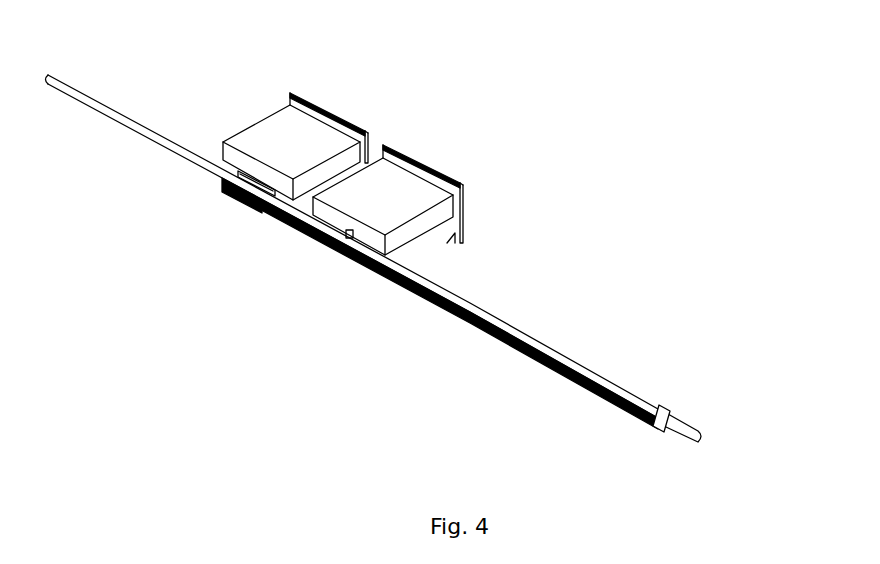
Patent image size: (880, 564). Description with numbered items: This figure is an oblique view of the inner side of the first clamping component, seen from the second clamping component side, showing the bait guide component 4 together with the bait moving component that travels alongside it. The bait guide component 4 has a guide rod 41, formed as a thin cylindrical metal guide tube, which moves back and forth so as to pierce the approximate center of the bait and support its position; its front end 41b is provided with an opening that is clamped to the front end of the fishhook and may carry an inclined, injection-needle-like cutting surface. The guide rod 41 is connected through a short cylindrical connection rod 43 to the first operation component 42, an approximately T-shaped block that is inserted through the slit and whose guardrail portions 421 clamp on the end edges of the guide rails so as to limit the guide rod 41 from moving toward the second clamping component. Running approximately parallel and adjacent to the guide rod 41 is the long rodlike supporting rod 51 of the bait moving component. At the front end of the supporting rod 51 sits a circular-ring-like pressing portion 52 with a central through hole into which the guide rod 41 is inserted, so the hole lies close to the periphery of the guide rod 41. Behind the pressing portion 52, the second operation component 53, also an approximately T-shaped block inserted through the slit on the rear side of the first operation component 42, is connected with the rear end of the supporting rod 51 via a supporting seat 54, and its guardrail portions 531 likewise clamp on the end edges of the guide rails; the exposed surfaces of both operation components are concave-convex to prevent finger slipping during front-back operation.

The bait guide component 4 is at (419, 245).
The guide rod 41 is at (356, 246).
The front end 41b is at (729, 422).
The first operation component 42 is at (439, 179).
The guardrail portions 421 is at (465, 173).
The connection rod 43 is at (329, 264).
The supporting rod 51 is at (460, 315).
The pressing portion 52 is at (627, 443).
The second operation component 53 is at (333, 107).
The guardrail portions 531 is at (366, 102).
The supporting seat 54 is at (201, 236).